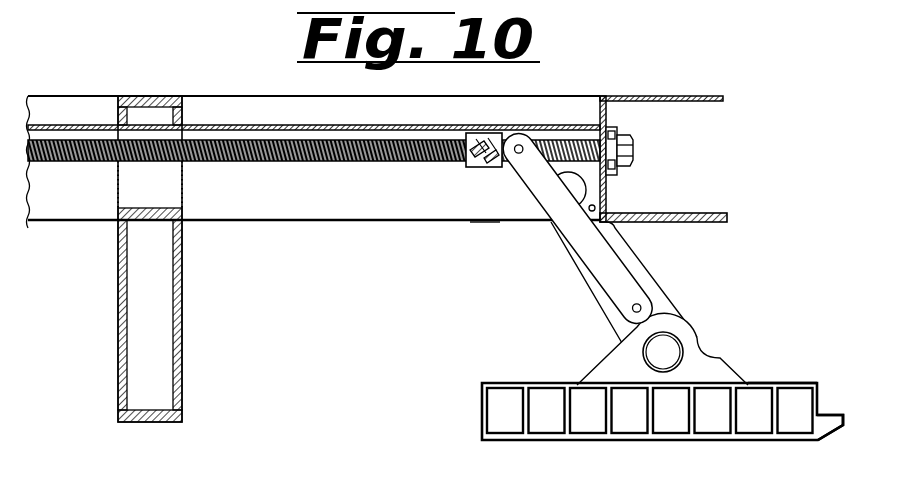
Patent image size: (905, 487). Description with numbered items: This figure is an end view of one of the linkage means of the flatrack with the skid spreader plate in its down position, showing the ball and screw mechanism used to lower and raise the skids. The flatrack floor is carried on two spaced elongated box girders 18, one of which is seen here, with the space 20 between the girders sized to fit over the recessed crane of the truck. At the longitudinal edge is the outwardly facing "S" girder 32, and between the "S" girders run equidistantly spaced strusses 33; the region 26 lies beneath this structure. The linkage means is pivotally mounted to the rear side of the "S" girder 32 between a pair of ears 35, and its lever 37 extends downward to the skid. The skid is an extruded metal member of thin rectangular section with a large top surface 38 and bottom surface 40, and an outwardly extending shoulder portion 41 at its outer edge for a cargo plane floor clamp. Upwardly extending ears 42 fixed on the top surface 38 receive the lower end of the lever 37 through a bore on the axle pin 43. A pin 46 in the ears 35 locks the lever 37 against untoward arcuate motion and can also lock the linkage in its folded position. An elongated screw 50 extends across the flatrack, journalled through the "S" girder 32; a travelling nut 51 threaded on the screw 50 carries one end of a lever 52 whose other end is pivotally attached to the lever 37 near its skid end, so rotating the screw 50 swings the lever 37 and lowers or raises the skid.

The box girder 18 is at (182, 290).
The space between the girders 20 is at (68, 368).
The lower frame member 26 is at (340, 368).
The "S" girder 32 is at (608, 186).
The struss 33 is at (282, 210).
The ear 35 is at (642, 252).
The lever 37 is at (658, 288).
The top surface 38 is at (760, 383).
The bottom surface 40 is at (645, 440).
The shoulder portion 41 is at (830, 413).
The upwardly extending ear 42 is at (701, 340).
The axle pin 43 is at (668, 356).
The pin 46 is at (605, 204).
The screw 50 is at (357, 163).
The travelling nut 51 is at (480, 165).
The lever 52 is at (495, 223).